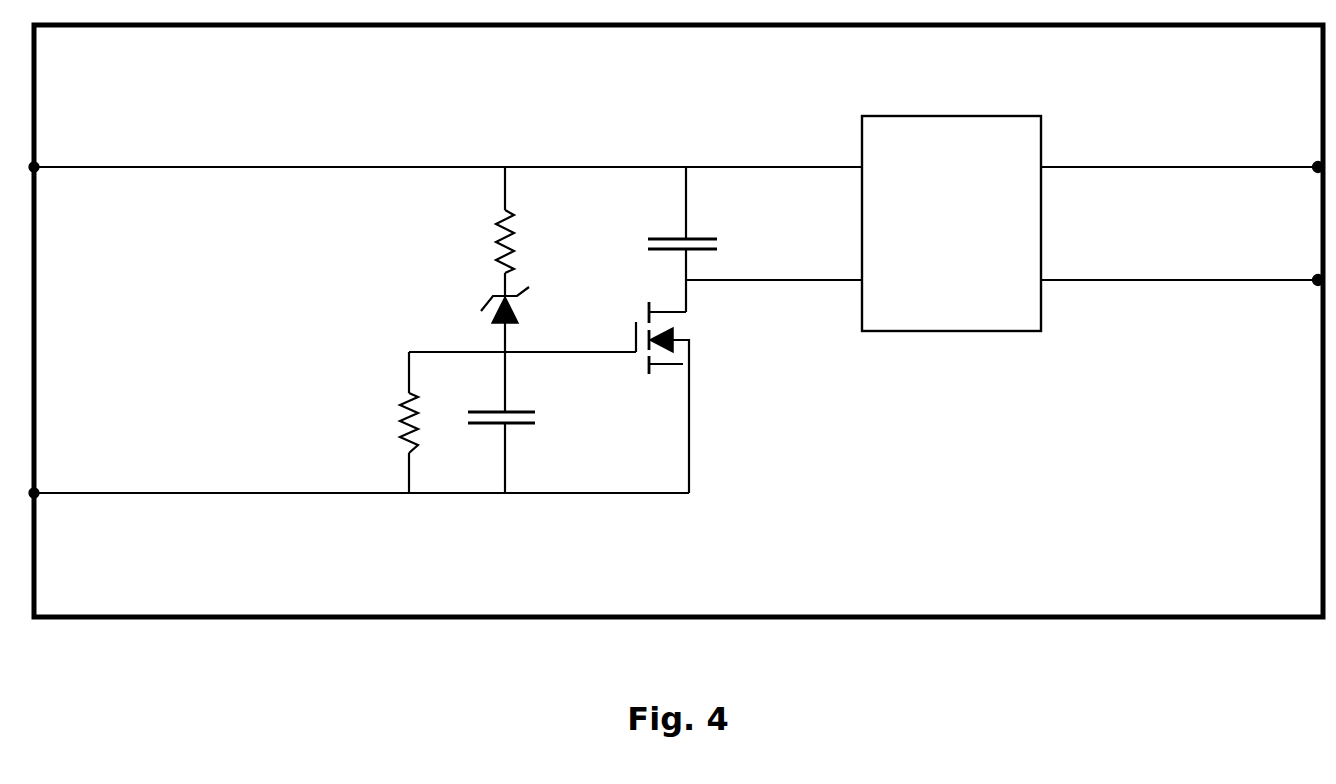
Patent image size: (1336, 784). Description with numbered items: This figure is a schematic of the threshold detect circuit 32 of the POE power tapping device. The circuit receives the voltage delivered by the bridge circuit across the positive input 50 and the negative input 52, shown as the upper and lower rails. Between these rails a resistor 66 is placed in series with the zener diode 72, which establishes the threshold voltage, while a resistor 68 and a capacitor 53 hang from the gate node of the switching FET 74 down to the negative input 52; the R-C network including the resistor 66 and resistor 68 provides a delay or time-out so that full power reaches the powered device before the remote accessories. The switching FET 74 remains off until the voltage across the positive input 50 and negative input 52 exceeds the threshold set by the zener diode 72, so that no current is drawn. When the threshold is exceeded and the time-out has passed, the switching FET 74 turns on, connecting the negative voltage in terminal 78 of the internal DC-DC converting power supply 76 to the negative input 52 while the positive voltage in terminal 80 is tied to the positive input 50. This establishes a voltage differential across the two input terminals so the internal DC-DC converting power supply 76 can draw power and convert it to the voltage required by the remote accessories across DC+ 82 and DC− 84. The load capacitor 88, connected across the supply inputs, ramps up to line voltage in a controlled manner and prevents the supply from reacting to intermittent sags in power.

The threshold detect circuit 32 is at (610, 290).
The positive input 50 is at (445, 150).
The negative input 52 is at (359, 526).
The capacitor 53 is at (522, 441).
The resistor 66 is at (474, 241).
The resistor 68 is at (437, 422).
The zener diode 72 is at (482, 307).
The switching FET 74 is at (699, 397).
The internal DC-DC converting power supply 76 is at (1005, 285).
The negative voltage in terminal 78 is at (905, 296).
The positive voltage in terminal 80 is at (907, 185).
The DC+ 82 is at (1182, 190).
The DC− 84 is at (1182, 301).
The load capacitor 88 is at (711, 239).